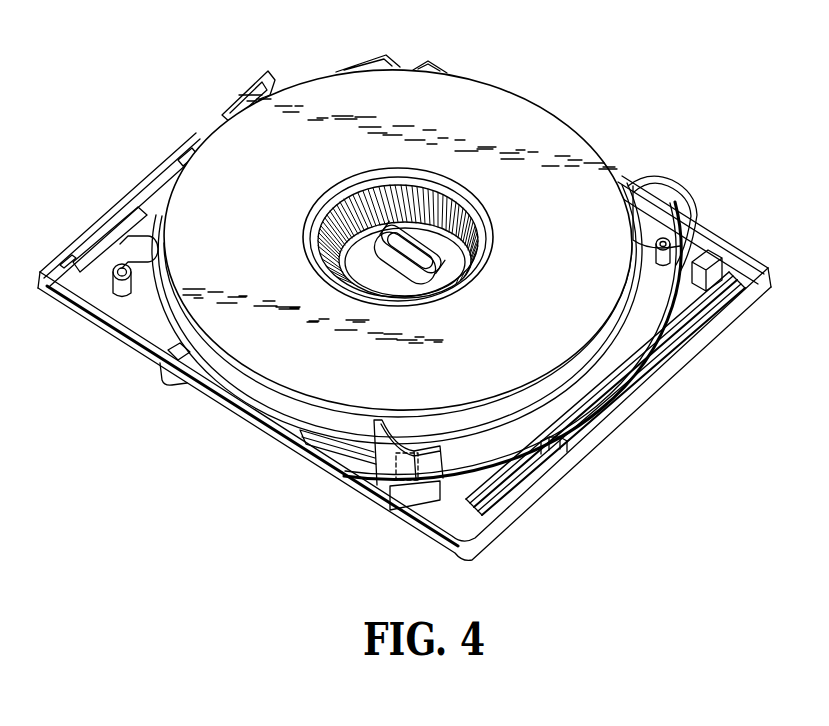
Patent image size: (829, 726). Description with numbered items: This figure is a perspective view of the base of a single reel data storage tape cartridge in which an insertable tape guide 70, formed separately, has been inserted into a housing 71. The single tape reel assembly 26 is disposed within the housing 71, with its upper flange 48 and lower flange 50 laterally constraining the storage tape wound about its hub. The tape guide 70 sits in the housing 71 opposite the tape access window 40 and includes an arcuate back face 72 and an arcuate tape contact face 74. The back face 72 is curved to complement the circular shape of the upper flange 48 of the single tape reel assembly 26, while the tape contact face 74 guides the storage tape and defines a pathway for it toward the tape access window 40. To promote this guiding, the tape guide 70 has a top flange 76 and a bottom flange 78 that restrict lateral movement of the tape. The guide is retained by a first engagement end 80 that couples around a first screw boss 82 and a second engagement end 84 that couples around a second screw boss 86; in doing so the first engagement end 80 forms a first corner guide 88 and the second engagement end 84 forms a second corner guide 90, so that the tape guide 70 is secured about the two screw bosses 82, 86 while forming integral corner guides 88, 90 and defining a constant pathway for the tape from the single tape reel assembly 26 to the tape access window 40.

The tape access window 40 is at (398, 297).
The single tape reel assembly 26 is at (216, 133).
The housing 71 is at (396, 176).
The upper flange 48 is at (228, 365).
The lower flange 50 is at (269, 392).
The second engagement end 84 is at (665, 186).
The second screw boss 86 is at (665, 240).
The second corner guide 90 is at (694, 247).
The arcuate back face 72 is at (648, 290).
The arcuate tape contact face 74 is at (618, 365).
The insertable tape guide 70 is at (583, 387).
The bottom flange 78 is at (490, 506).
The top flange 76 is at (440, 452).
The first screw boss 82 is at (393, 486).
The first corner guide 88 is at (390, 466).
The first engagement end 80 is at (359, 456).